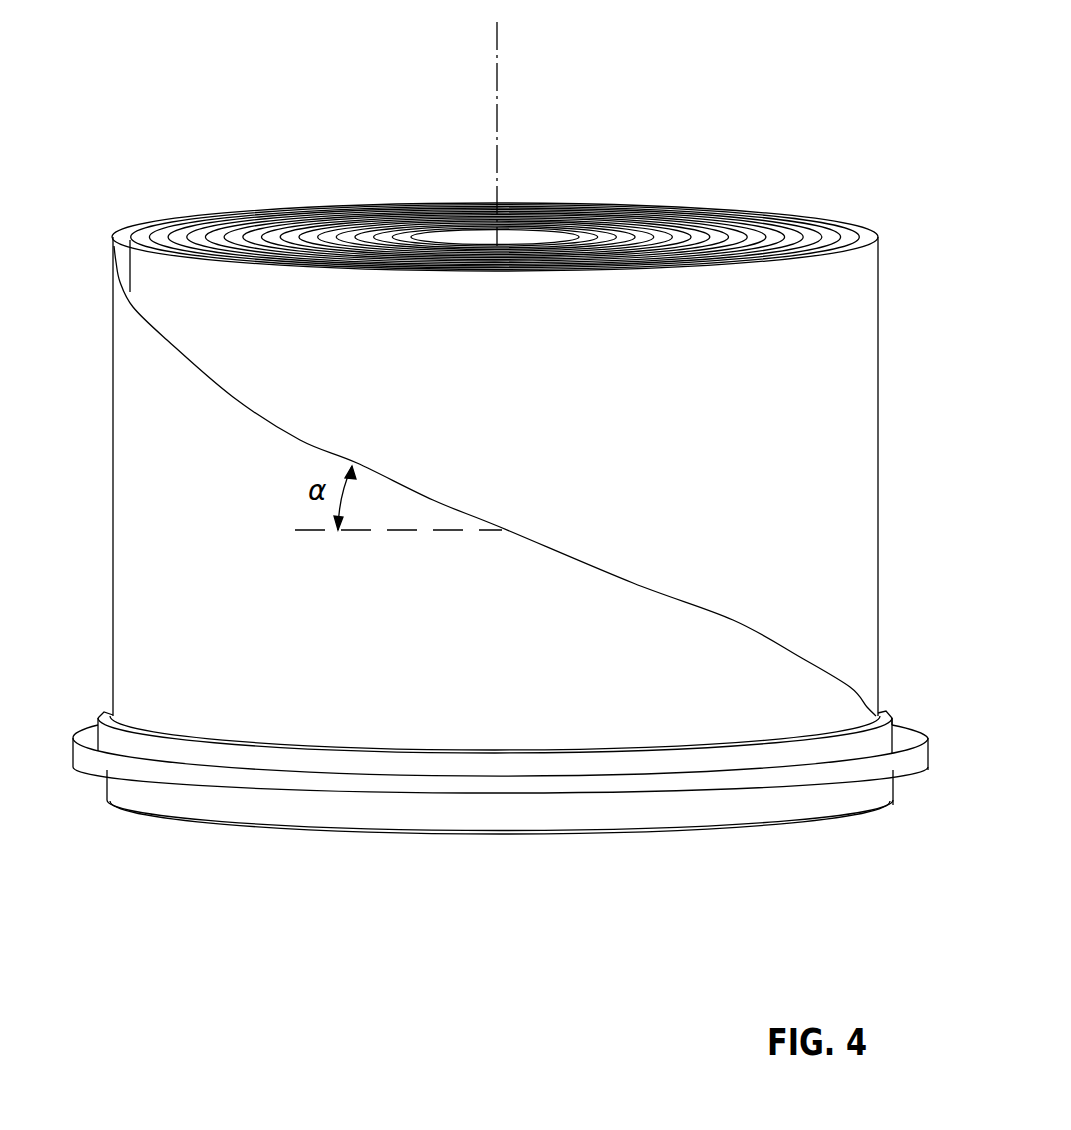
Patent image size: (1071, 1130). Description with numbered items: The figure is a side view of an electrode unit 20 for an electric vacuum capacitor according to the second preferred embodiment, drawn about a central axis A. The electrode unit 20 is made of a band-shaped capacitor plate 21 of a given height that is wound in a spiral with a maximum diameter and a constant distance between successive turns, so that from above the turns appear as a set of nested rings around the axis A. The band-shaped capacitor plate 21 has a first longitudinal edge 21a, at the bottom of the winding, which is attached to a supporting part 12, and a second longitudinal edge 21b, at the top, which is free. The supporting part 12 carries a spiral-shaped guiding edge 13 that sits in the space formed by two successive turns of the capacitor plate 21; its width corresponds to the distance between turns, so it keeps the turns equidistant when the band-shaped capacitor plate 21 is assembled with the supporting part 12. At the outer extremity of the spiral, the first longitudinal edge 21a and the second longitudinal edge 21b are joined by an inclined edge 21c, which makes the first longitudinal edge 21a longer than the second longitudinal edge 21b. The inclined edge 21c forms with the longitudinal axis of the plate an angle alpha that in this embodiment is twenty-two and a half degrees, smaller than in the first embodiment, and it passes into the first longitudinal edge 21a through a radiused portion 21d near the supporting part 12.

The electrode unit 20 is at (688, 131).
The band-shaped capacitor plate 21 is at (863, 538).
The first longitudinal edge 21a is at (104, 714).
The second longitudinal edge 21b is at (846, 238).
The inclined edge 21c is at (737, 620).
The radiused portion 21d is at (858, 705).
The spiral-shaped guiding edge 13 is at (673, 762).
The supporting part 12 is at (830, 802).
The axis A is at (510, 124).